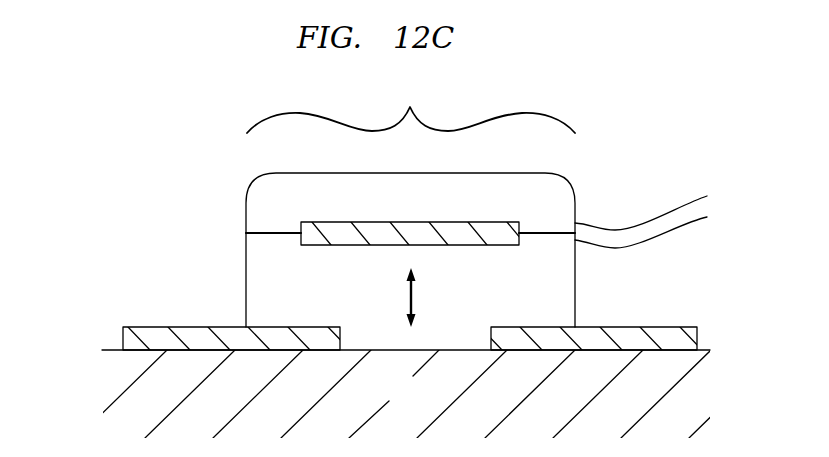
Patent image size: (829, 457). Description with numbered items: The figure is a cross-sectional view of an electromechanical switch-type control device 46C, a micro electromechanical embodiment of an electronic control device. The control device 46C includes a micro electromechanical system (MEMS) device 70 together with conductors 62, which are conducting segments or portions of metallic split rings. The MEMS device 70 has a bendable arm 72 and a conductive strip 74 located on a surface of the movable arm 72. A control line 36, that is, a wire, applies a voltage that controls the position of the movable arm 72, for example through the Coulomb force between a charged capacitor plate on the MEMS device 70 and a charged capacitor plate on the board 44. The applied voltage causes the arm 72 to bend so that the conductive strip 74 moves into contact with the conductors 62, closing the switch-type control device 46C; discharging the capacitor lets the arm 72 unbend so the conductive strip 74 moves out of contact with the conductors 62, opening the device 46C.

The electromechanical switch-type control device 46C is at (95, 262).
The micro electromechanical system (MEMS) device 70 is at (411, 104).
The bendable arm 72 is at (246, 210).
The conductive strip 74 is at (365, 222).
The control line 36 is at (676, 214).
The conductors 62 is at (122, 336).
The board 44 is at (435, 407).